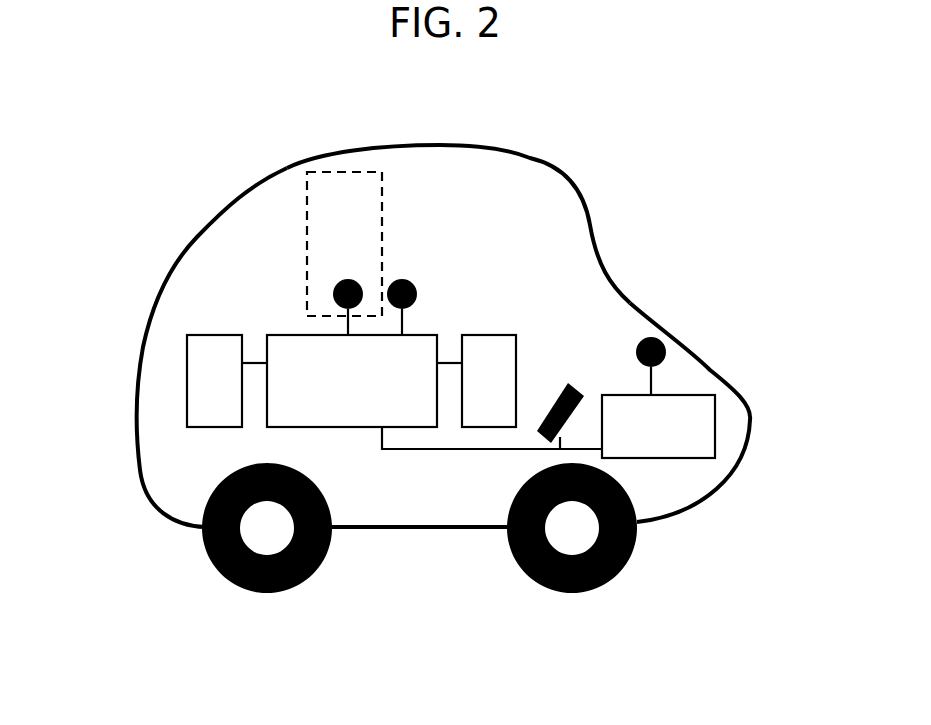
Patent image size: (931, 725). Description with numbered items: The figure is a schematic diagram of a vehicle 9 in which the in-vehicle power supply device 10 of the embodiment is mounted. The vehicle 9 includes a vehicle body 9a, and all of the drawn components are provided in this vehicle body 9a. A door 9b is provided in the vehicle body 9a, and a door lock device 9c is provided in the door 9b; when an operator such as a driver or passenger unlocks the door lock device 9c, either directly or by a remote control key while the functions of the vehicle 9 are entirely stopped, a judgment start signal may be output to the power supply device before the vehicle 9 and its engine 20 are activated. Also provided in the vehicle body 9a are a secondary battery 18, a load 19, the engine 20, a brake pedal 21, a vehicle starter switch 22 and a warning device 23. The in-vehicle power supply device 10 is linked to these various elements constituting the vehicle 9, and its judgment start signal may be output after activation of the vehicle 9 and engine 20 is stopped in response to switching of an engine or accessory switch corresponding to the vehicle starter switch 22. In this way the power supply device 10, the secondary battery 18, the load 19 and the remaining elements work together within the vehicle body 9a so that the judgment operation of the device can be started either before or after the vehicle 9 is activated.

The vehicle 9 is at (447, 570).
The vehicle body 9a is at (533, 200).
The door 9b is at (317, 172).
The door lock device 9c is at (354, 265).
The warning device 23 is at (415, 263).
The in-vehicle power supply device 10 is at (294, 322).
The secondary battery 18 is at (175, 352).
The load 19 is at (525, 345).
The engine 20 is at (687, 392).
The brake pedal 21 is at (585, 385).
The vehicle starter switch 22 is at (670, 337).